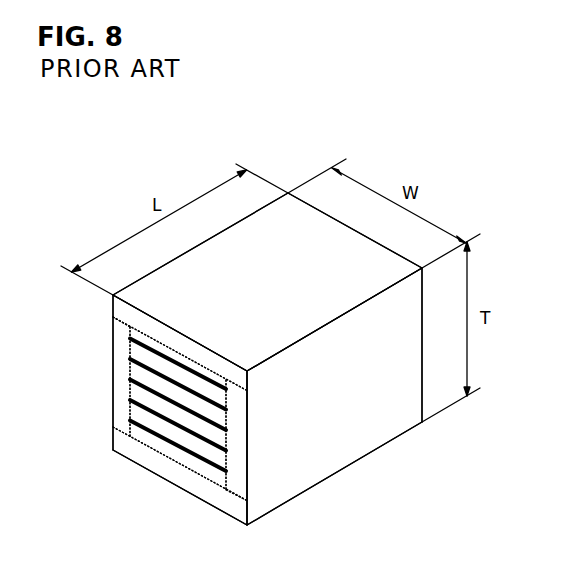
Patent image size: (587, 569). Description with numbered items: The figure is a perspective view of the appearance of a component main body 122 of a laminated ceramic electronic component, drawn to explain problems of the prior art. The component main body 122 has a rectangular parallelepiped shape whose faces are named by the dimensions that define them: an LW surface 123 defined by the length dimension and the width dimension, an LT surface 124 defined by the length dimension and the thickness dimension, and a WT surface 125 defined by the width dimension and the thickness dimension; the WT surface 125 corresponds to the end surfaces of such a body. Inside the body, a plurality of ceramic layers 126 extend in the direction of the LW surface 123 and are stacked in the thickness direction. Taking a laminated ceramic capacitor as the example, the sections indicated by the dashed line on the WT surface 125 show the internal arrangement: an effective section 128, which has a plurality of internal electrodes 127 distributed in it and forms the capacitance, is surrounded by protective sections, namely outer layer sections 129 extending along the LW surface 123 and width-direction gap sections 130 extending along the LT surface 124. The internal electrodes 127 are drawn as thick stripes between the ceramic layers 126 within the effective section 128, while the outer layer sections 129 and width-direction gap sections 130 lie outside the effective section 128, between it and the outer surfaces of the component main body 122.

The component main body 122 is at (113, 149).
The LW surface 123 is at (282, 263).
The LT surface 124 is at (328, 423).
The WT surface 125 is at (123, 397).
The ceramic layers 126 is at (182, 435).
The internal electrodes 127 is at (213, 447).
The effective section 128 is at (136, 352).
The outer layer sections 129 is at (124, 314).
The width-direction gap sections 130 is at (118, 420).